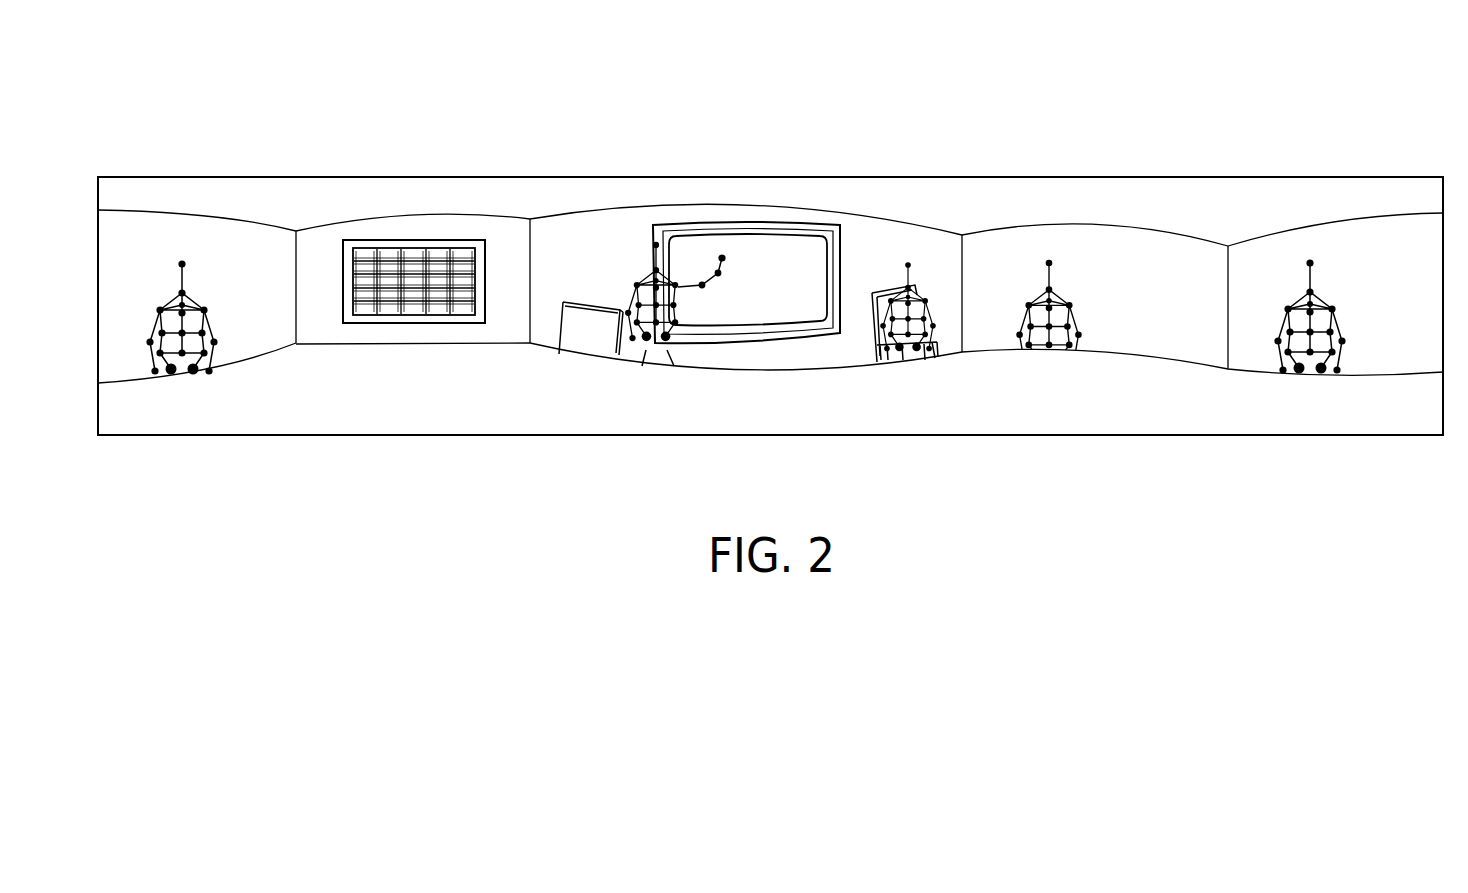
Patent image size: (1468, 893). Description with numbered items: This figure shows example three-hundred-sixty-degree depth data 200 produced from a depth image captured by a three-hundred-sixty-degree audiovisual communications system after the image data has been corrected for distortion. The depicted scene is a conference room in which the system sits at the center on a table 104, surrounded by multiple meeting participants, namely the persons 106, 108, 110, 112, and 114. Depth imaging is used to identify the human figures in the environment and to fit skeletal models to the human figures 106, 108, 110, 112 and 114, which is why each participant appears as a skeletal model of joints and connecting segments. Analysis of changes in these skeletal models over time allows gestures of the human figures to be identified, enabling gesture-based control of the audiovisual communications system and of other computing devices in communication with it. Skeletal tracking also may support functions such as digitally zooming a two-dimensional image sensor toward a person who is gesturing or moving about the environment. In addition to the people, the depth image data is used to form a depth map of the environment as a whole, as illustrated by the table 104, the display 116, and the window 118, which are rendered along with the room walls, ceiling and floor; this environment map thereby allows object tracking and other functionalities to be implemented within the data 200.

The data 200 is at (1062, 93).
The table 104 is at (494, 407).
The person 106 is at (648, 272).
The person 108 is at (927, 285).
The person 110 is at (1063, 280).
The person 112 is at (1335, 285).
The person 114 is at (170, 283).
The display 116 is at (840, 251).
The window 118 is at (485, 260).